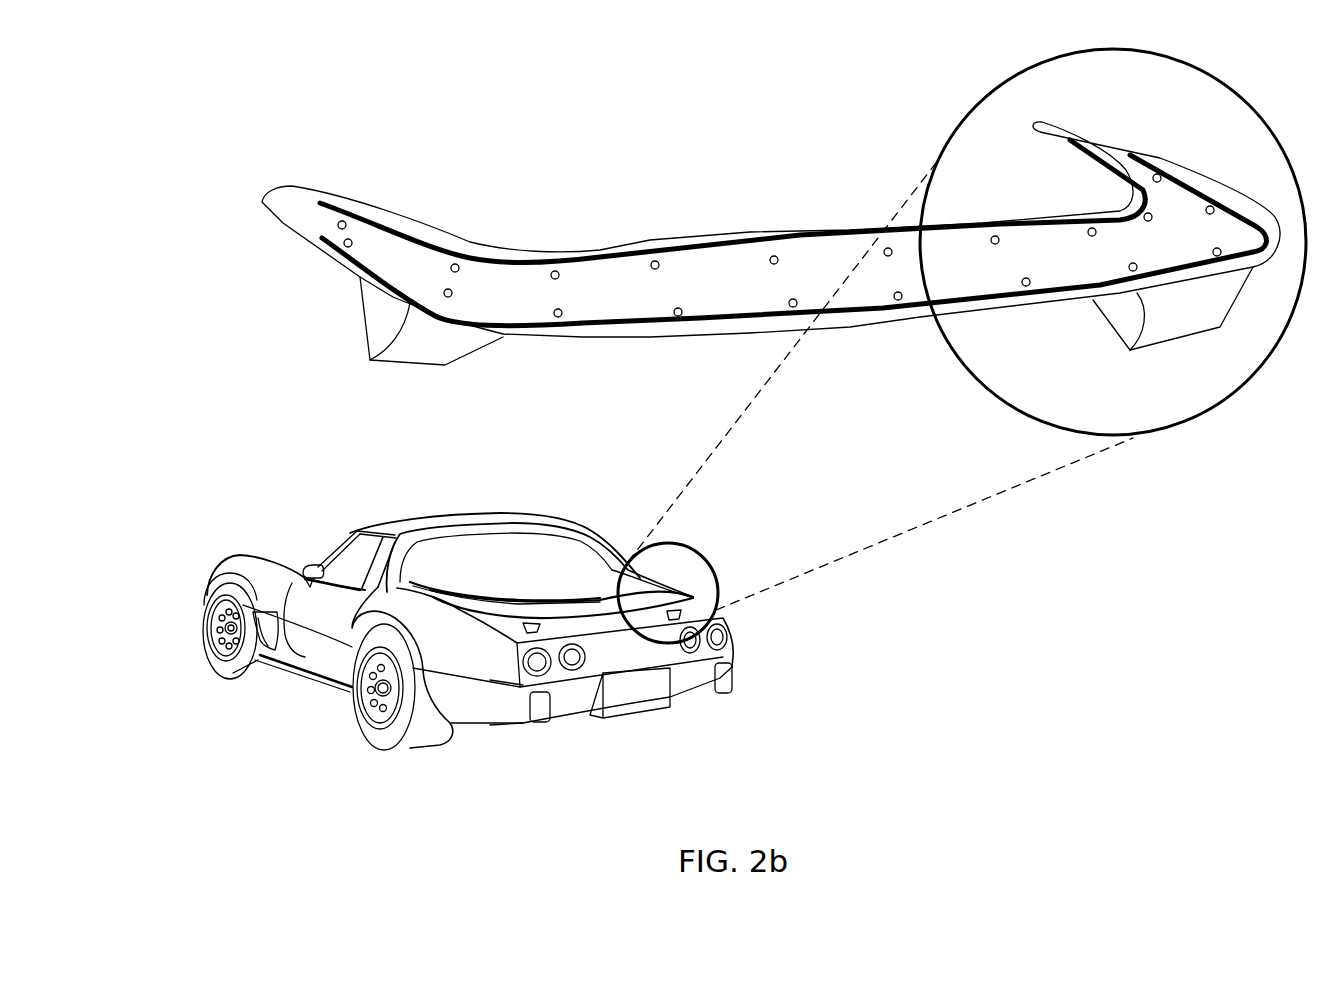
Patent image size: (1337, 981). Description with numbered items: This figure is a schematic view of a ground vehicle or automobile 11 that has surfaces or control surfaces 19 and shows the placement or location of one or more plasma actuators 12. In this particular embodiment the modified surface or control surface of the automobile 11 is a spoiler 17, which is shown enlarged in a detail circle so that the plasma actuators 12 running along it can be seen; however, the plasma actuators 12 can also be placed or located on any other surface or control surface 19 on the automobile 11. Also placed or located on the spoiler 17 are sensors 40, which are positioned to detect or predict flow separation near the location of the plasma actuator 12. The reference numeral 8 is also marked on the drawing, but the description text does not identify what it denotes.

The roof 8 is at (397, 527).
The automobile 11 is at (295, 570).
The plasma actuator 12 is at (770, 317).
The spoiler 17 is at (513, 293).
The control surface 19 is at (320, 652).
The sensor 40 is at (1133, 267).